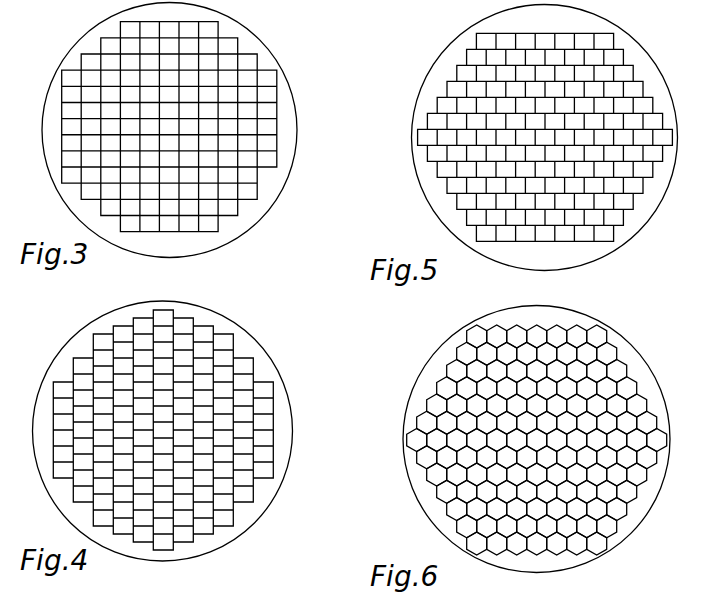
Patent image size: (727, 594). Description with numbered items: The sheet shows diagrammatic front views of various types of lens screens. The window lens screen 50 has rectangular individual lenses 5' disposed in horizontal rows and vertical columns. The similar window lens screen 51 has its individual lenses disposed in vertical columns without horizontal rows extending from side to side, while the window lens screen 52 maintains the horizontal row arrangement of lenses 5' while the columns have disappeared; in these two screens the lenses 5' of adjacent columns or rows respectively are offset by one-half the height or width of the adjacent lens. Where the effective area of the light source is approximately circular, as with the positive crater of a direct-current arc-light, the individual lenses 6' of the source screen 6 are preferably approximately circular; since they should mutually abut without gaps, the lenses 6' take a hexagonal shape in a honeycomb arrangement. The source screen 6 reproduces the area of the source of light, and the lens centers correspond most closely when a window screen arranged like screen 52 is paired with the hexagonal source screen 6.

In FIG. 3, the individual lenses 5' is at (201, 127).
In FIG. 5, the individual lenses 5' is at (514, 137).
In FIG. 4, the individual lenses 5' is at (163, 418).
In FIG. 3, the window lens screen 50 is at (248, 212).
In FIG. 4, the window lens screen 51 is at (263, 367).
In FIG. 5, the window lens screen 52 is at (455, 218).
In FIG. 6, the source screen 6 is at (533, 439).
In FIG. 6, the individual lenses 6' is at (515, 440).